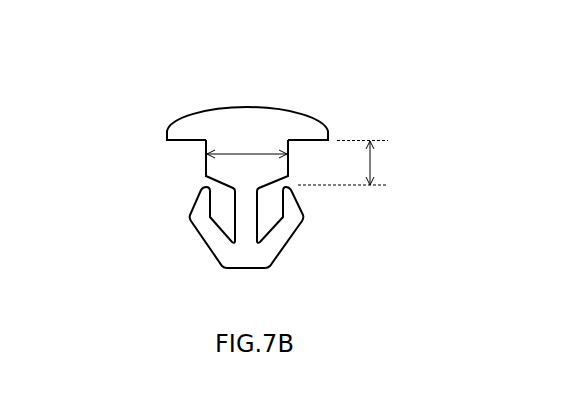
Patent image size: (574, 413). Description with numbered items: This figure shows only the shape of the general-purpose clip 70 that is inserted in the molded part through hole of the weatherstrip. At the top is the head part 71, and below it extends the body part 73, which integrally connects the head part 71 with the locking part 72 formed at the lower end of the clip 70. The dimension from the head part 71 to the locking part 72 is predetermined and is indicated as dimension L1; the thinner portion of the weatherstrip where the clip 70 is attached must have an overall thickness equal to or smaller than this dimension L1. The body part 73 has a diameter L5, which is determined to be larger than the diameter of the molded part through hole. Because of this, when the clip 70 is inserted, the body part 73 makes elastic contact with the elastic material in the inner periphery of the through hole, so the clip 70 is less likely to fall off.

The clip 70 is at (358, 66).
The head part 71 is at (181, 113).
The locking part 72 is at (191, 202).
The body part 73 is at (206, 164).
The diameter of body part L5 is at (247, 144).
The dimension from head part to locking part L1 is at (372, 162).